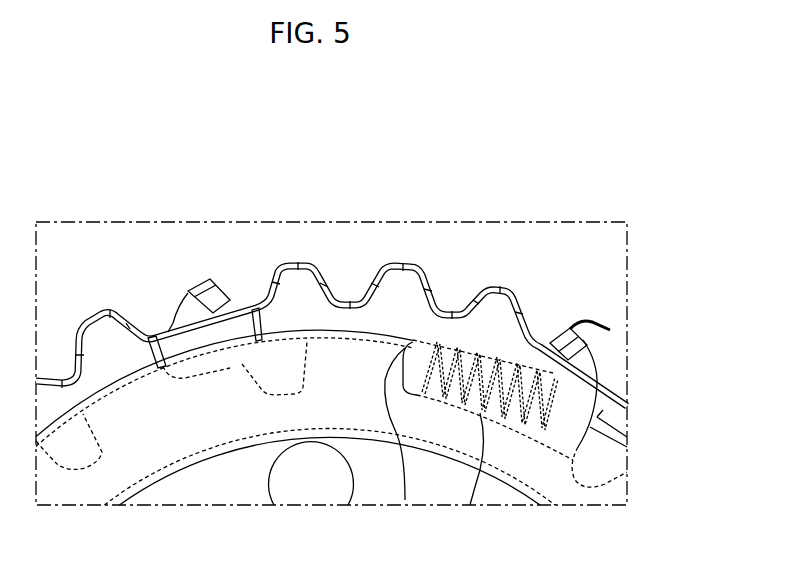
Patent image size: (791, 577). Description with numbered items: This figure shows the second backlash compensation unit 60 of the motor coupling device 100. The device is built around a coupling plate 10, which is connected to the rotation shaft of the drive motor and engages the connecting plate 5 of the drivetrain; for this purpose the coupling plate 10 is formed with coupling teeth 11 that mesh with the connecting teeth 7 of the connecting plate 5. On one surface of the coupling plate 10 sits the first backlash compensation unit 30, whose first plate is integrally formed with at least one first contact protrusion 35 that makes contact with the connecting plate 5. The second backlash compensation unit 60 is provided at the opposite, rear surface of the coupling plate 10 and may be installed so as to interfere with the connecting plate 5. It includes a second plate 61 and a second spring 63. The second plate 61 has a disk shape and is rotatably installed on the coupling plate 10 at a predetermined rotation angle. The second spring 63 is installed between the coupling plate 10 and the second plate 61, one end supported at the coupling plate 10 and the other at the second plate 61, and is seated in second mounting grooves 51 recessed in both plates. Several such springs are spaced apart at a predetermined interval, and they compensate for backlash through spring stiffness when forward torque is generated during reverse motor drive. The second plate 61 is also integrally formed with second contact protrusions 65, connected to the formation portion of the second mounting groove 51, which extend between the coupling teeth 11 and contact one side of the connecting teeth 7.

The motor coupling device 100 is at (295, 160).
The coupling plate 10 is at (245, 500).
The second plate 61 is at (187, 458).
The connecting teeth 7 is at (345, 306).
The coupling teeth 11 is at (496, 309).
The first backlash compensation unit 30 is at (188, 278).
The first contact protrusion 35 is at (214, 279).
The second spring 63 is at (470, 505).
The second mounting groove 51 is at (405, 500).
The second contact protrusion 65 is at (570, 338).
The connecting plate 5 is at (608, 317).
The second backlash compensation unit 60 is at (590, 445).